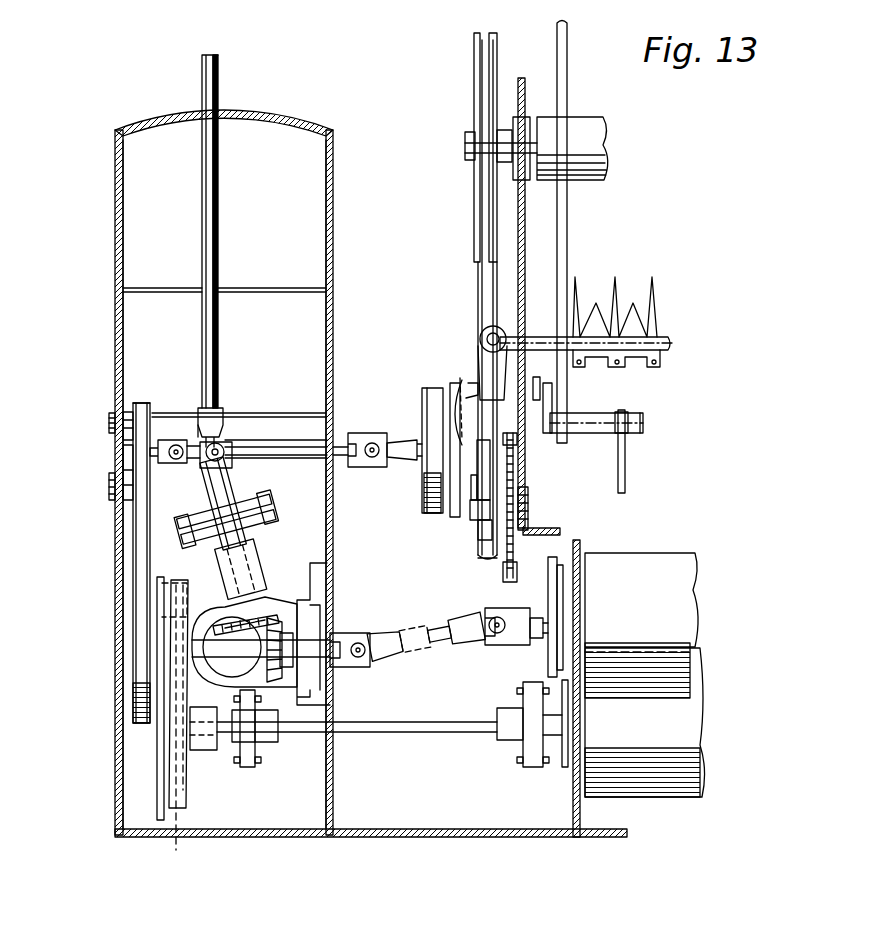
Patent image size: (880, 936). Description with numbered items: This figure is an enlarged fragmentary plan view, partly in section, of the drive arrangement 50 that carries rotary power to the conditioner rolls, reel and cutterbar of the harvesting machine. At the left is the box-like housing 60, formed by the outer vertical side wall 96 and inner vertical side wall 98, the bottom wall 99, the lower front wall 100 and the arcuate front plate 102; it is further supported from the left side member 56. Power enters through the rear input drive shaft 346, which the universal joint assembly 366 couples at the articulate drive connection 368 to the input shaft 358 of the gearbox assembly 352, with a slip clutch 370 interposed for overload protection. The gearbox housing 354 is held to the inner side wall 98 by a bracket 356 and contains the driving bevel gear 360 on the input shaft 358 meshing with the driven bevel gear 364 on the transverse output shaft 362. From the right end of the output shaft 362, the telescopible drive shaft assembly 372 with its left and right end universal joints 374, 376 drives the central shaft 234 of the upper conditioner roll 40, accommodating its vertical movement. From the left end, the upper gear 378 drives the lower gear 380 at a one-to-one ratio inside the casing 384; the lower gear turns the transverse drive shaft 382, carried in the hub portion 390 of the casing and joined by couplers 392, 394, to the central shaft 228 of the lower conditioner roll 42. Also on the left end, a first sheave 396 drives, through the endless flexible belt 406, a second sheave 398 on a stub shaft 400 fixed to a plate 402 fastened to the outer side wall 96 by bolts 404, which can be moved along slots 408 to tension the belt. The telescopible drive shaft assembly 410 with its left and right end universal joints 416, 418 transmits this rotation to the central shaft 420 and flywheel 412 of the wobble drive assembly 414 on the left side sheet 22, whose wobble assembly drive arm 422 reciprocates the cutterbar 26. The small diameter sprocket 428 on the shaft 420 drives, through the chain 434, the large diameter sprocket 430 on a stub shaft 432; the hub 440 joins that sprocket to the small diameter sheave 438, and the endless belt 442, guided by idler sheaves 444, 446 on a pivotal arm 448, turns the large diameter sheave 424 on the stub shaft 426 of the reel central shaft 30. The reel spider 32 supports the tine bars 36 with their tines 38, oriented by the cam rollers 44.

The left side sheet 22 is at (525, 252).
The cutterbar 26 is at (660, 305).
The central shaft 30 is at (585, 117).
The spider 32 is at (568, 206).
The tine bars 36 is at (578, 420).
The tines 38 is at (626, 460).
The upper conditioner roll 40 is at (697, 585).
The lower conditioner roll 42 is at (705, 700).
The cam rollers 44 is at (545, 434).
The drive arrangement 50 is at (185, 312).
The left side member 56 is at (573, 820).
The box-like housing 60 is at (115, 618).
The outer vertical side wall 96 is at (123, 320).
The inner vertical side wall 98 is at (326, 312).
The bottom wall 99 is at (258, 838).
The lower front wall 100 is at (243, 290).
The arcuate front plate 102 is at (268, 116).
The central shaft 228 is at (562, 742).
The central shaft 234 is at (582, 606).
The rear input drive shaft 346 is at (219, 72).
The gearbox assembly 352 is at (284, 590).
The housing 354 is at (272, 604).
The bracket 356 is at (325, 588).
The input shaft 358 is at (183, 553).
The driving bevel gear 360 is at (230, 632).
The transverse output shaft 362 is at (232, 658).
The driven bevel gear 364 is at (272, 744).
The universal joint assembly 366 is at (236, 466).
The articulate drive connection 368 is at (234, 442).
The slip clutch 370 is at (272, 512).
The telescopible drive shaft assembly 372 is at (442, 636).
The left end universal joint 374 is at (350, 630).
The right end universal joint 376 is at (493, 612).
The upper gear 378 is at (195, 586).
The lower gear 380 is at (176, 850).
The transverse drive shaft 382 is at (420, 736).
The casing 384 is at (186, 805).
The hub portion 390 is at (203, 752).
The coupler 392 is at (248, 768).
The coupler 394 is at (523, 760).
The first sheave 396 is at (133, 700).
The second sheave 398 is at (180, 434).
The stub shaft 400 is at (123, 430).
The plate 402 is at (117, 382).
The bolts 404 is at (109, 420).
The endless flexible belt 406 is at (140, 527).
The slots 408 is at (125, 455).
The telescopible drive shaft assembly 410 is at (318, 440).
The flywheel 412 is at (455, 388).
The wobble drive assembly 414 is at (470, 372).
The left end universal joint 416 is at (198, 424).
The right end universal joint 418 is at (368, 432).
The central shaft 420 is at (432, 389).
The wobble assembly drive arm 422 is at (503, 355).
The large diameter sheave 424 is at (475, 78).
The stub shaft 426 is at (513, 116).
The small diameter sprocket 428 is at (516, 470).
The large diameter sprocket 430 is at (515, 568).
The stub shaft 432 is at (475, 512).
The chain 434 is at (529, 505).
The small diameter sheave 438 is at (480, 532).
The hub 440 is at (487, 562).
The endless belt 442 is at (478, 275).
The idler sheave 444 is at (470, 386).
The idler sheave 446 is at (425, 486).
The arm 448 is at (458, 420).